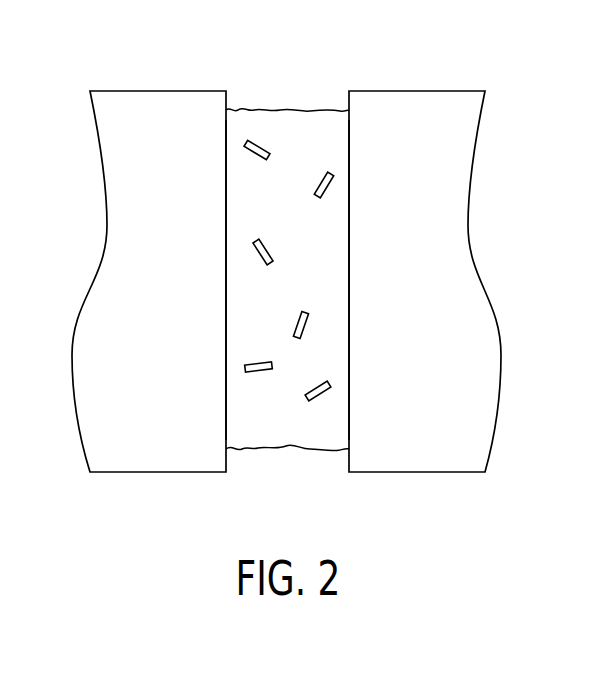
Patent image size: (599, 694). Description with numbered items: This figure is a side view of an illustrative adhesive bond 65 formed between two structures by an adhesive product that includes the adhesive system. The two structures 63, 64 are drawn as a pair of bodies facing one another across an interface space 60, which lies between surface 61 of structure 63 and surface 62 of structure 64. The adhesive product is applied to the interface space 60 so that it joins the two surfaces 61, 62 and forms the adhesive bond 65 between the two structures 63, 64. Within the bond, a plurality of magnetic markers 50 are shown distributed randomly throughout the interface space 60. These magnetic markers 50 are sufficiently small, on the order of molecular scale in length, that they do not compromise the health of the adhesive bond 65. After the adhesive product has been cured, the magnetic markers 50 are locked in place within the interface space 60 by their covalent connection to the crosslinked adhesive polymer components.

The magnetic markers 50 is at (254, 141).
The interface space 60 is at (292, 455).
The surface 61 is at (226, 405).
The surface 62 is at (350, 398).
The structure 63 is at (180, 98).
The structure 64 is at (416, 98).
The adhesive bond 65 is at (310, 117).